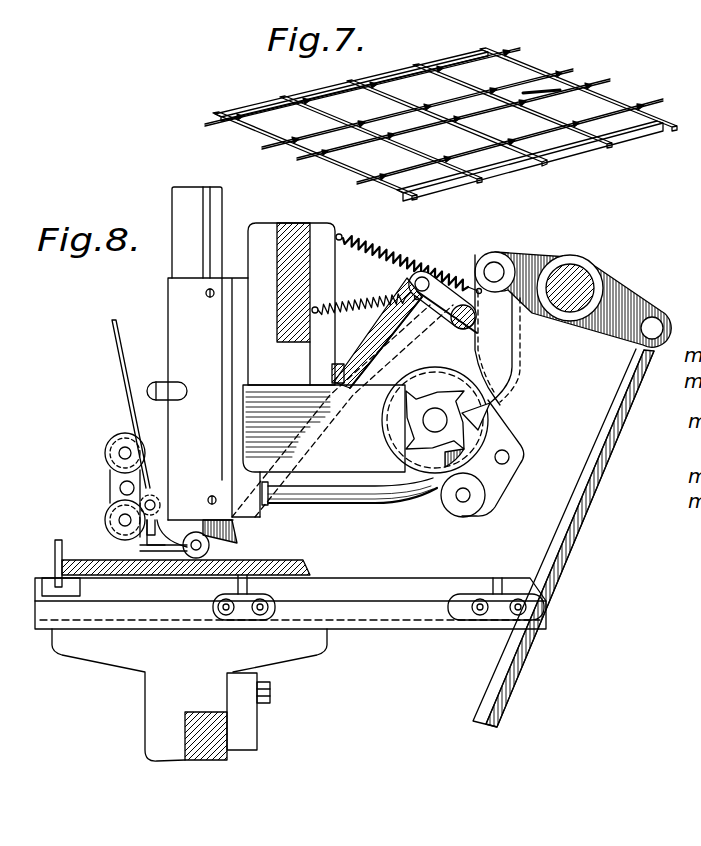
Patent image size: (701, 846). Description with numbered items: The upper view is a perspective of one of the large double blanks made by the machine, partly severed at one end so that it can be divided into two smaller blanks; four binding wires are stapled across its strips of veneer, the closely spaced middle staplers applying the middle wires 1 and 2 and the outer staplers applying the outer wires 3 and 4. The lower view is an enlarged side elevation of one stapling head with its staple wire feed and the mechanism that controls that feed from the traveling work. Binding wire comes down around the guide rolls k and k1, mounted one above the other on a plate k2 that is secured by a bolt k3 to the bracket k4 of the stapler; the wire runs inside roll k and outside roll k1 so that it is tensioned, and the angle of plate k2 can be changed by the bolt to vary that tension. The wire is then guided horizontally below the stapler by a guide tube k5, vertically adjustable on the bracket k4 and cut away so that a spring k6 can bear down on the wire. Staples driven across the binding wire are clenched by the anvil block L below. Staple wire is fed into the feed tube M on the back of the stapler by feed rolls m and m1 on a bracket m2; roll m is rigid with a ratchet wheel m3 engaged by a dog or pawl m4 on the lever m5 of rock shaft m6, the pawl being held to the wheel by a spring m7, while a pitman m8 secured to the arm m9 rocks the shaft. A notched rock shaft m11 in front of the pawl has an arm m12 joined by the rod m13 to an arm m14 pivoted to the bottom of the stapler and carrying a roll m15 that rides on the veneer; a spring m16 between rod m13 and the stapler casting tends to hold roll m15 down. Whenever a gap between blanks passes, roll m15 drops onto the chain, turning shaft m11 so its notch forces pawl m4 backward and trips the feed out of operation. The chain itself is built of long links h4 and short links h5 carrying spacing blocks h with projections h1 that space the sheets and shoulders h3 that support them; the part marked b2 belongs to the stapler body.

In FIG. 7, the middle binding wire 1 is at (262, 150).
In FIG. 7, the middle binding wire 2 is at (304, 156).
In FIG. 7, the outer binding wire 3 is at (213, 126).
In FIG. 7, the outer binding wire 4 is at (358, 185).
In FIG. 8, the guide block b2 is at (293, 233).
In FIG. 8, the spring m7 is at (436, 264).
In FIG. 8, the spring m16 is at (392, 298).
In FIG. 8, the lever m5 is at (530, 254).
In FIG. 8, the rock shaft m6 is at (585, 270).
In FIG. 8, the arm m9 is at (648, 305).
In FIG. 8, the pitman m8 is at (612, 453).
In FIG. 8, the dog or pawl m4 is at (495, 348).
In FIG. 8, the rock shaft m11 is at (432, 322).
In FIG. 8, the arm m12 is at (416, 345).
In FIG. 8, the rod or bar m13 is at (376, 392).
In FIG. 8, the feed roll m is at (485, 431).
In FIG. 8, the ratchet wheel m3 is at (463, 413).
In FIG. 8, the feed roll m1 is at (475, 508).
In FIG. 8, the feed tube M is at (376, 494).
In FIG. 8, the bracket m2 is at (342, 508).
In FIG. 8, the arm m14 is at (232, 528).
In FIG. 8, the roll m15 is at (262, 548).
In FIG. 8, the guide roll k is at (108, 446).
In FIG. 8, the guide roll k1 is at (105, 520).
In FIG. 8, the plate k2 is at (110, 482).
In FIG. 8, the bolt k3 is at (134, 487).
In FIG. 8, the bracket k4 is at (150, 455).
In FIG. 8, the guide tube k5 is at (140, 548).
In FIG. 8, the spring k6 is at (150, 576).
In FIG. 8, the spacing block h is at (82, 592).
In FIG. 8, the spacing projection h1 is at (90, 545).
In FIG. 8, the shoulder h3 is at (45, 566).
In FIG. 8, the long link h4 is at (502, 578).
In FIG. 8, the short link h5 is at (264, 600).
In FIG. 8, the clench block or anvil L is at (167, 703).